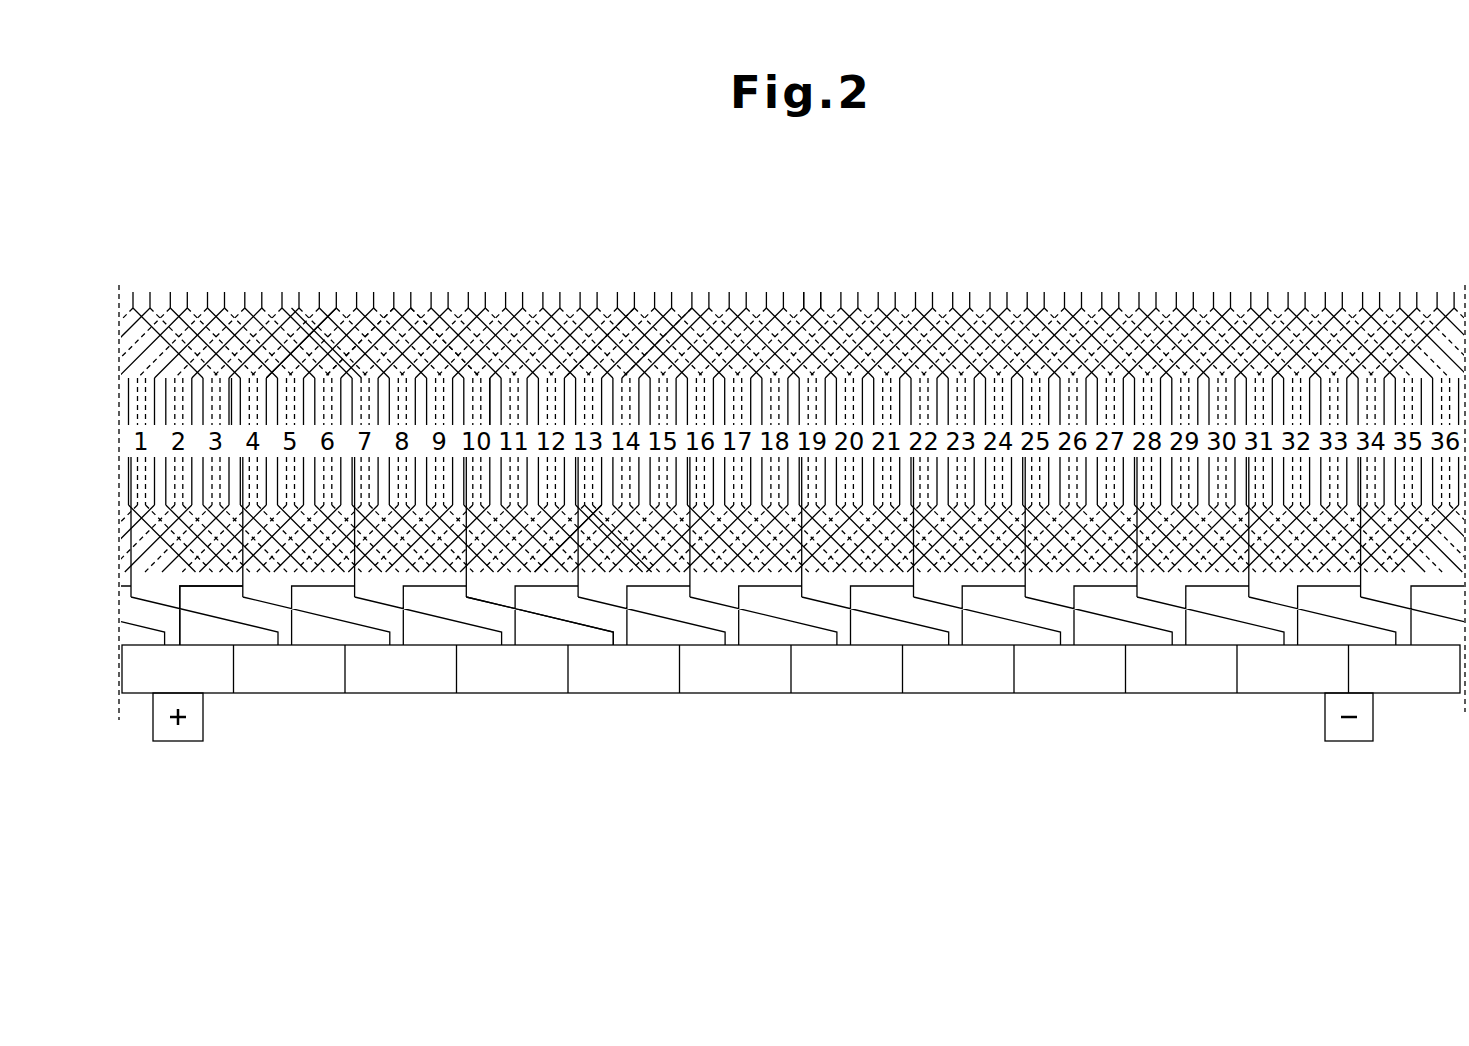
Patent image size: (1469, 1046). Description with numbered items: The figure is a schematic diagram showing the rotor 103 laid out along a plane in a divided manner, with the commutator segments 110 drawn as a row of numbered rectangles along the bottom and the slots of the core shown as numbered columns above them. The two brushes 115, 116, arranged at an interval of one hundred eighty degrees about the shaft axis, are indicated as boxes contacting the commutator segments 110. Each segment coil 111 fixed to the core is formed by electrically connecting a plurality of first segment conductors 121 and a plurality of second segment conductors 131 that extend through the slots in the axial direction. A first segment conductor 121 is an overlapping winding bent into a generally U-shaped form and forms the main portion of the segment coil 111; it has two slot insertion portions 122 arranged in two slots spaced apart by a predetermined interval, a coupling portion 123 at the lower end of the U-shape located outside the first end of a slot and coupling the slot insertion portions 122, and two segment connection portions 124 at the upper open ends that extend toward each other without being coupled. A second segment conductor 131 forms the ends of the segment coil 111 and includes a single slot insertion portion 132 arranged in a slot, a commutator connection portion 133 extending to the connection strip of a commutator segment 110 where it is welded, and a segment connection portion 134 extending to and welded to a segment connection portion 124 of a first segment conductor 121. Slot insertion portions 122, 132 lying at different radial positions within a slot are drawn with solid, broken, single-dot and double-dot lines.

The rotor 103 is at (1233, 257).
The commutator segments 110 is at (437, 695).
The segment coils 111 is at (828, 305).
The brush 115 is at (180, 741).
The brush 116 is at (1349, 741).
The first segment conductor 121 is at (385, 307).
The slot insertion portions 122 is at (500, 387).
The coupling portion 123 is at (598, 568).
The segment connection portions 124 is at (418, 307).
The second segment conductor 131 is at (297, 348).
The slot insertion portion 132 is at (232, 383).
The commutator connection portion 133 is at (180, 633).
The segment connection portion 134 is at (295, 348).